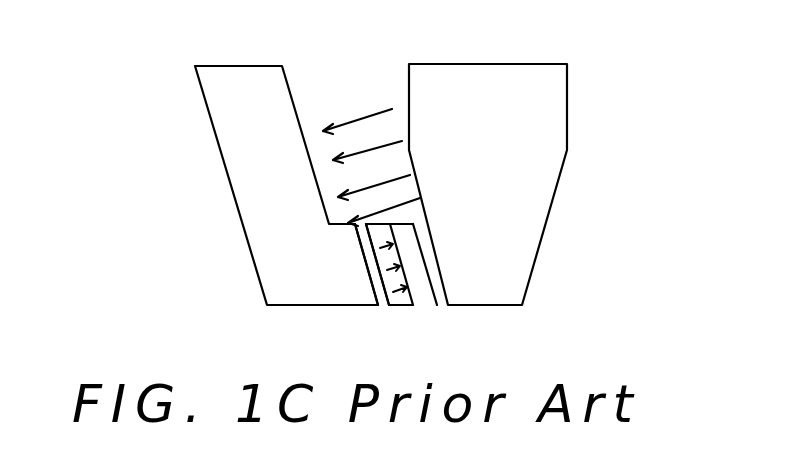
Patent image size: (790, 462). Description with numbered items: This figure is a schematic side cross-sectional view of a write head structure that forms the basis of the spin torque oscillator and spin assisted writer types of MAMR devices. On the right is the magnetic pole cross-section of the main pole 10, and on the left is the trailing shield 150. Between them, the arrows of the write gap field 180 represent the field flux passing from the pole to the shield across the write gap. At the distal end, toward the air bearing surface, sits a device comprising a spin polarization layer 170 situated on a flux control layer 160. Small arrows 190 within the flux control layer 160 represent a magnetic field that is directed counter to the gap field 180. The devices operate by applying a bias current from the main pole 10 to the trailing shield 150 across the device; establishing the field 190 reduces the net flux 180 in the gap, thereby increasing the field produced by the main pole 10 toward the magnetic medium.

The main pole 10 is at (553, 119).
The trailing shield 150 is at (225, 120).
The flux control layer 160 is at (411, 301).
The spin polarization layer 170 is at (428, 296).
The write gap field 180 is at (355, 107).
The flux control layer field 190 is at (388, 283).